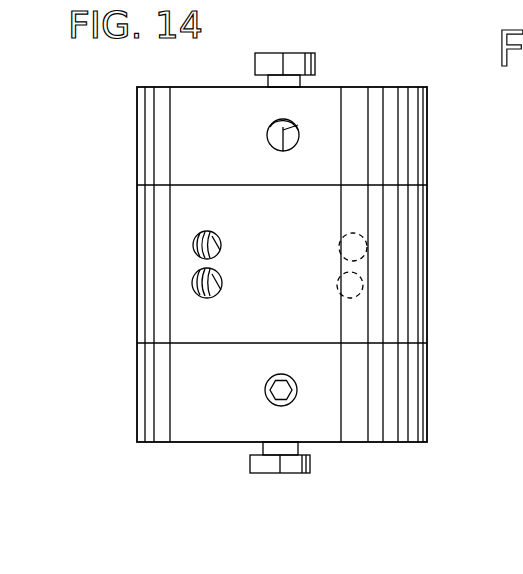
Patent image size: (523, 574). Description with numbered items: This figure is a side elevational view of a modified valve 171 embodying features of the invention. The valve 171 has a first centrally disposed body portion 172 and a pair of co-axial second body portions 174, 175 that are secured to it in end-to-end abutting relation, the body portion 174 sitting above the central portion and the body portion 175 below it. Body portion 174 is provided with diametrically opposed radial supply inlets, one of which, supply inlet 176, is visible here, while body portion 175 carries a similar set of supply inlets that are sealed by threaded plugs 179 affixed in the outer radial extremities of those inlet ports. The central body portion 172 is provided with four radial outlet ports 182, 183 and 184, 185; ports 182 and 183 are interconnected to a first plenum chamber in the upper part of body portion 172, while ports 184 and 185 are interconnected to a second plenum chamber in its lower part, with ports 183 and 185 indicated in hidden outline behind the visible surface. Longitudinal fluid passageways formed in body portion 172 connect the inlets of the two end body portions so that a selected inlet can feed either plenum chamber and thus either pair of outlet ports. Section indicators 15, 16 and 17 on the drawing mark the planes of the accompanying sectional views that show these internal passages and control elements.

The valve 171 is at (418, 25).
The first centrally disposed body portion 172 is at (416, 293).
The second body portion 174 is at (420, 118).
The second body portion 175 is at (413, 395).
The radial supply inlet 176 is at (268, 135).
The threaded plug 179 is at (270, 392).
The radial outlet port 182 is at (215, 232).
The radial outlet port 183 is at (340, 244).
The radial outlet port 184 is at (212, 297).
The radial outlet port 185 is at (338, 286).
The section line 15- 15 is at (280, 165).
The section line 16- 16 is at (284, 209).
The section line 17- 17 is at (310, 268).